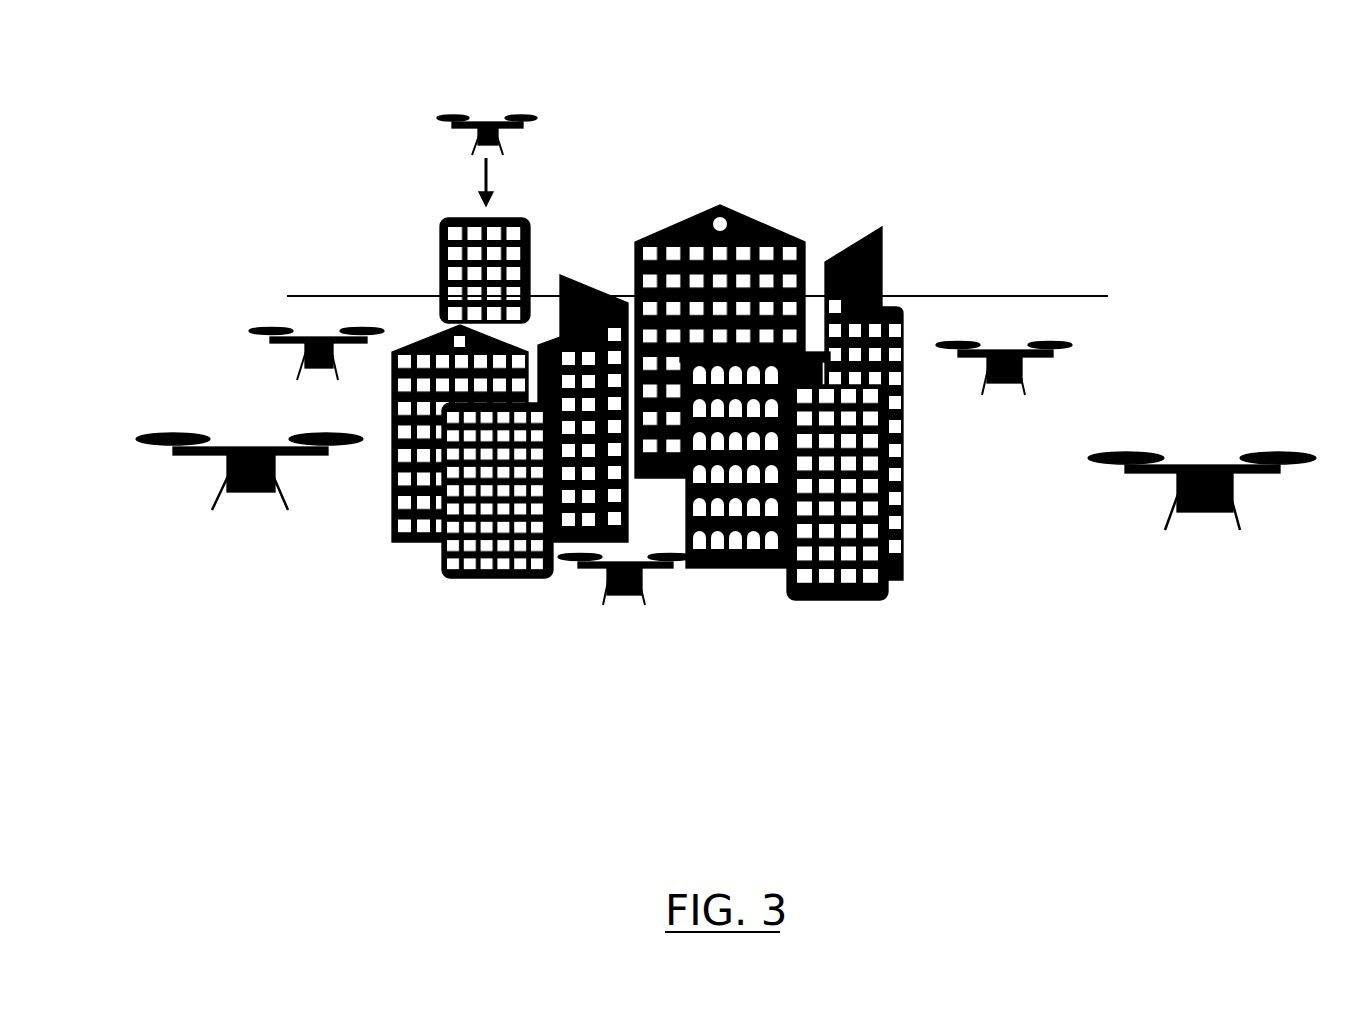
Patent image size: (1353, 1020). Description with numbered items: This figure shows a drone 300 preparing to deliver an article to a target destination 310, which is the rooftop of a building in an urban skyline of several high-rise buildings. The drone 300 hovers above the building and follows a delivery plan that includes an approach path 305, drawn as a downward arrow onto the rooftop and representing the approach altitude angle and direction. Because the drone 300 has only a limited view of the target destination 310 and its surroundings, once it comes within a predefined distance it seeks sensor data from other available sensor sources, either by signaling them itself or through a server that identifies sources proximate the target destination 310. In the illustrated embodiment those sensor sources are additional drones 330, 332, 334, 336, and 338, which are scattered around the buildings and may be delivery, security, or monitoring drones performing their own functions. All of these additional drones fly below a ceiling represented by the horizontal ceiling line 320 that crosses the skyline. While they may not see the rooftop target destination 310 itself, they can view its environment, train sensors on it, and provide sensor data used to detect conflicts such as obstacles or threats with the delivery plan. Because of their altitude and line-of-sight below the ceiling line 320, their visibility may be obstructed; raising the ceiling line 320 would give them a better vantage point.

The drone 300 is at (486, 122).
The approach path 305 is at (489, 183).
The target destination 310 is at (478, 218).
The ceiling line 320 is at (990, 298).
The drone 330 is at (262, 323).
The drone 332 is at (200, 435).
The drone 334 is at (645, 598).
The drone 336 is at (1020, 368).
The drone 338 is at (1192, 465).